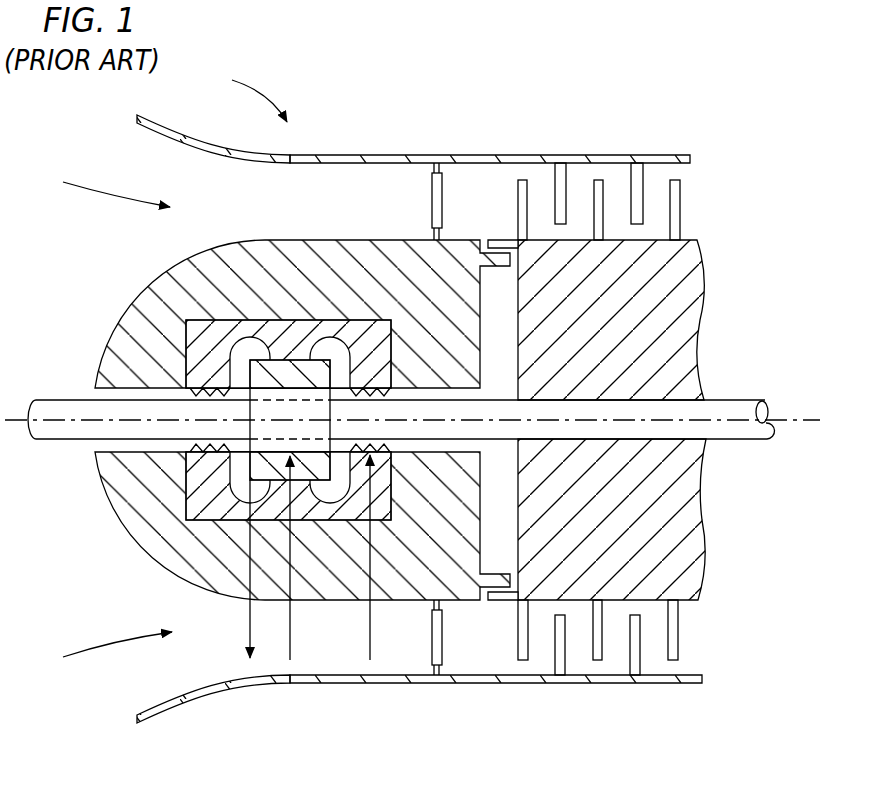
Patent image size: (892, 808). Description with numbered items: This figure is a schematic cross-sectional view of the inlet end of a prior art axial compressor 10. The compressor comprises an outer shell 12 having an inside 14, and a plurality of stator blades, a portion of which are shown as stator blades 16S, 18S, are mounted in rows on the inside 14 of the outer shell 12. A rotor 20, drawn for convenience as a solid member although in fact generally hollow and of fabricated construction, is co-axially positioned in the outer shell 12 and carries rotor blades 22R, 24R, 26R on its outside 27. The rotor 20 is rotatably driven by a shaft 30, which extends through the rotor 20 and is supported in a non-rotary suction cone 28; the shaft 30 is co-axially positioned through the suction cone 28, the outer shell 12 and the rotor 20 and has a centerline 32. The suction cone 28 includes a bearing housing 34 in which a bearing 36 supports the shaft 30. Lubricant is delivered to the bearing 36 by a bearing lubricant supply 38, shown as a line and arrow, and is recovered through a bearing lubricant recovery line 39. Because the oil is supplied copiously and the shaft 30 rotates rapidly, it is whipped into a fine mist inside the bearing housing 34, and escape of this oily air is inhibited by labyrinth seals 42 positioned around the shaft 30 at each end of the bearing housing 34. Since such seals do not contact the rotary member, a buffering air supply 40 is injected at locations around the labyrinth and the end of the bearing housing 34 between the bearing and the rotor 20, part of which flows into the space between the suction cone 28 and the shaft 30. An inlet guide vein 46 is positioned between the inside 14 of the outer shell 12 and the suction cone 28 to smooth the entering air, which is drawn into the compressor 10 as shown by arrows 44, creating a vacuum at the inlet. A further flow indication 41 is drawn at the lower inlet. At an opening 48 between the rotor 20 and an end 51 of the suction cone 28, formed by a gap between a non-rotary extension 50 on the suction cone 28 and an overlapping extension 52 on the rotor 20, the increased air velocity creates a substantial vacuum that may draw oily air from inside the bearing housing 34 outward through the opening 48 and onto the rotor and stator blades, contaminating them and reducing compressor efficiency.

The axial compressor 10 is at (244, 91).
The outer shell 12 is at (378, 155).
The inside 14 is at (348, 165).
The stator blade 16S is at (556, 185).
The stator blade 18S is at (630, 183).
The rotor 20 is at (643, 243).
The rotor blade 22R is at (513, 650).
The rotor blade 24R is at (593, 650).
The rotor blade 26R is at (668, 650).
The outside 27 is at (650, 598).
The suction cone 28 is at (118, 512).
The shaft 30 is at (722, 400).
The centerline 32 is at (797, 422).
The bearing housing 34 is at (250, 470).
The bearing 36 is at (250, 433).
The bearing lubricant supply 38 is at (290, 622).
The bearing lubricant recovery line 39 is at (250, 620).
The buffering air supply 40 is at (370, 622).
The air flow 41 is at (97, 645).
The labyrinth seals 42 is at (187, 360).
The arrows 44 is at (97, 197).
The inlet guide vein 46 is at (432, 208).
The opening 48 is at (510, 253).
The non-rotary extension 50 is at (495, 266).
The end 51 is at (480, 327).
The overlapping extension 52 is at (502, 242).